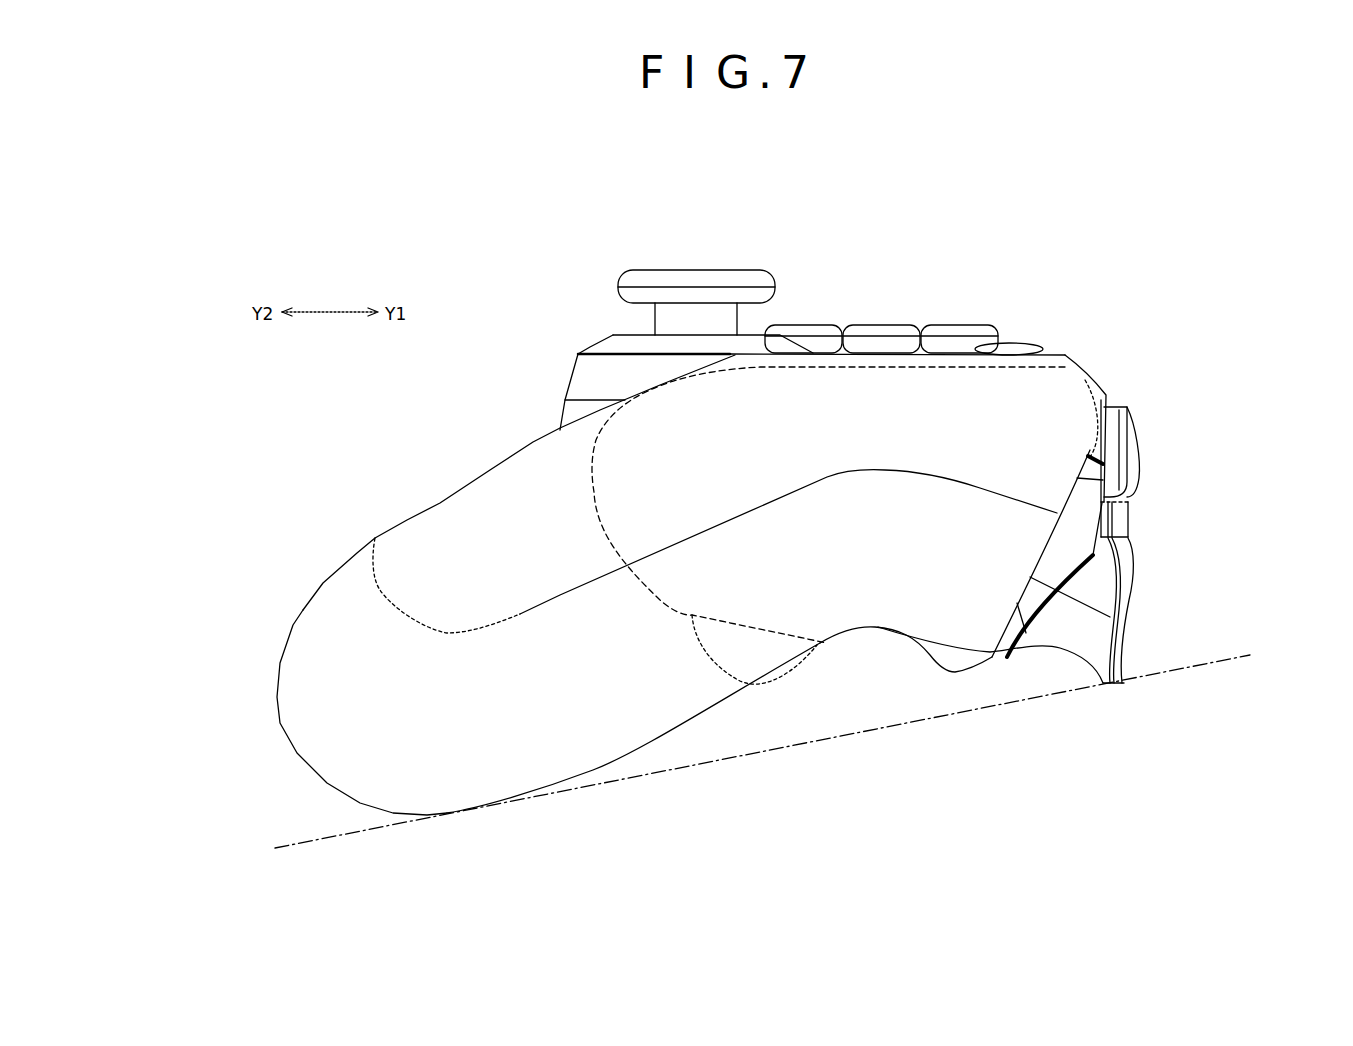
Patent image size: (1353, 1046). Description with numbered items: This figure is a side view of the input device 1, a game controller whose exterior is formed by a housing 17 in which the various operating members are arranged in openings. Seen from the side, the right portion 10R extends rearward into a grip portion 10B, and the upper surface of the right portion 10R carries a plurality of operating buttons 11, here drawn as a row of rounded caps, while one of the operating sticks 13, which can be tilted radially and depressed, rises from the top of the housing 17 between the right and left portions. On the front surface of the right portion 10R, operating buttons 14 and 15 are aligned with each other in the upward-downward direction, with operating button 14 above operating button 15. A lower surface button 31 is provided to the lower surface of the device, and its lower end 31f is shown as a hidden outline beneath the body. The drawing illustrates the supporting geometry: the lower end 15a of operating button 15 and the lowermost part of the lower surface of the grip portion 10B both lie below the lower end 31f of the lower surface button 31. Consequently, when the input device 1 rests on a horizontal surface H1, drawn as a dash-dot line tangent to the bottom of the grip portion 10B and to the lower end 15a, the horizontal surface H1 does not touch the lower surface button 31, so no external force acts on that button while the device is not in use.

The input device 1 is at (1118, 295).
The grip portion 10B is at (452, 793).
The right portion 10R is at (595, 772).
The operating buttons 11 is at (958, 328).
The operating sticks 13 is at (745, 270).
The operating button 14 is at (1132, 468).
The operating button 15 is at (1127, 590).
The lower end 15a is at (1108, 678).
The housing 17 is at (534, 438).
The lower surface button 31 is at (815, 661).
The lower end 31f is at (768, 687).
The horizontal surface H1 is at (783, 745).